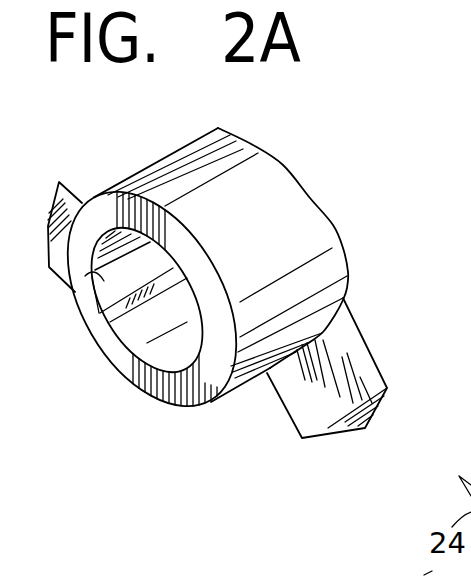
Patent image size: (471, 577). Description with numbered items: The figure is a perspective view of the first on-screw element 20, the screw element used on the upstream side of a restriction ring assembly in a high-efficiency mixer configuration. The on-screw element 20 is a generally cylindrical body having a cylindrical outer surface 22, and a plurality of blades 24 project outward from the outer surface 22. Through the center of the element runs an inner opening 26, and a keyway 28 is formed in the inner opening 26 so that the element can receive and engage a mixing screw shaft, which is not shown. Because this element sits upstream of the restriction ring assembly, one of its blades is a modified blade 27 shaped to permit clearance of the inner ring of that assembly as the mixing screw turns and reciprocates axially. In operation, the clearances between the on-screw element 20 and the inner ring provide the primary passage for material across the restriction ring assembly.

The on-screw element 20 is at (347, 263).
The cylindrical outer surface 22 is at (185, 165).
The blades 24 is at (78, 196).
The inner opening 26 is at (147, 347).
The modified blade 27 is at (381, 376).
The keyway 28 is at (100, 281).